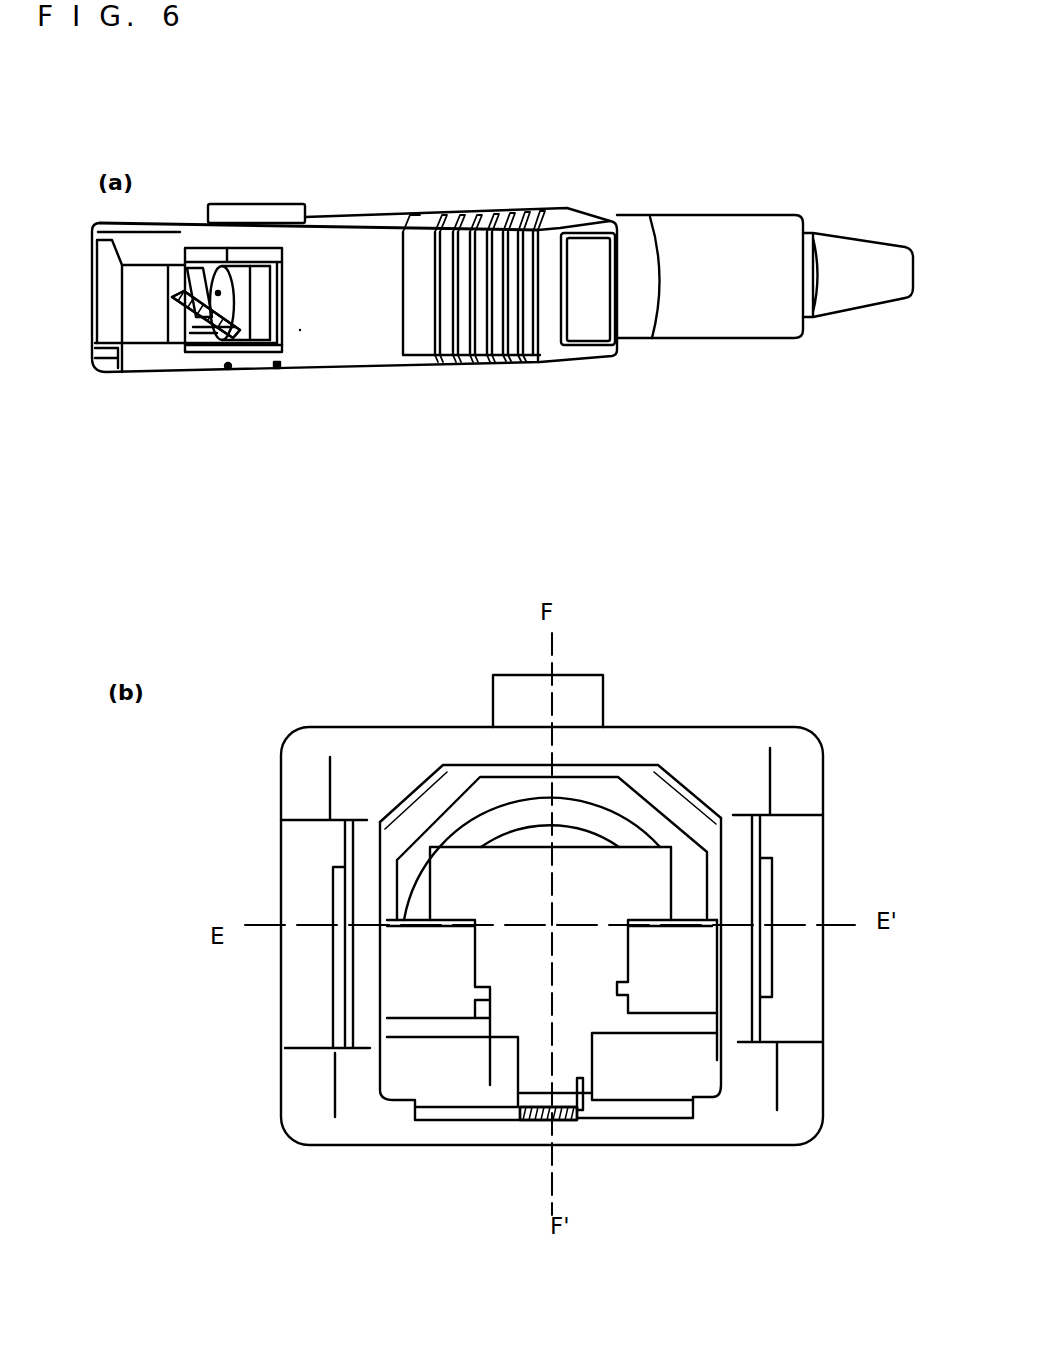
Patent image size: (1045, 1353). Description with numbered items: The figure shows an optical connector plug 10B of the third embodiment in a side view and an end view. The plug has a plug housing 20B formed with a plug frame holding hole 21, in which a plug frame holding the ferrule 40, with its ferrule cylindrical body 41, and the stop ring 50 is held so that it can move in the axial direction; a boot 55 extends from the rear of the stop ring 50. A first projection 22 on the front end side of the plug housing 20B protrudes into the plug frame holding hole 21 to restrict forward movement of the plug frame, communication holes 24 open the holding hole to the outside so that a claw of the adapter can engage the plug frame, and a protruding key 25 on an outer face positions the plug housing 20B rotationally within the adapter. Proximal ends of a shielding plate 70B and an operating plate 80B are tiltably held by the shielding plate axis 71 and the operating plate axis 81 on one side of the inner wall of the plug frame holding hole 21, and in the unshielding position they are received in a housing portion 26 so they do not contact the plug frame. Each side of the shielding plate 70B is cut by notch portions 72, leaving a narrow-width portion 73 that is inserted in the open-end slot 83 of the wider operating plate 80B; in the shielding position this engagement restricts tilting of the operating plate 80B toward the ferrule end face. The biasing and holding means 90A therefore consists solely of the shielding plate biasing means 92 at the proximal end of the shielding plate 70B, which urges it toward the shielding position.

The optical connector plug 10B is at (698, 145).
The plug housing 20B is at (300, 330).
The plug frame holding hole 21 is at (103, 272).
The first projection 22 is at (147, 277).
The communication holes 24 is at (178, 267).
The protruding key 25 is at (247, 204).
The housing portion 26 is at (93, 347).
The ferrule 40 is at (206, 314).
The ferrule cylindrical body 41 is at (238, 338).
The stop ring 50 is at (642, 303).
The boot 55 is at (735, 305).
The shielding plate 70B is at (170, 347).
The shielding plate axis 71 is at (228, 370).
The notch portions 72 is at (433, 1018).
The narrow-width portion 73 is at (523, 1015).
The operating plate 80B is at (207, 347).
The operating plate axis 81 is at (278, 370).
The open-end slot 83 is at (486, 963).
The biasing and holding means 90A is at (548, 1113).
The shielding plate biasing means 92 is at (539, 1120).